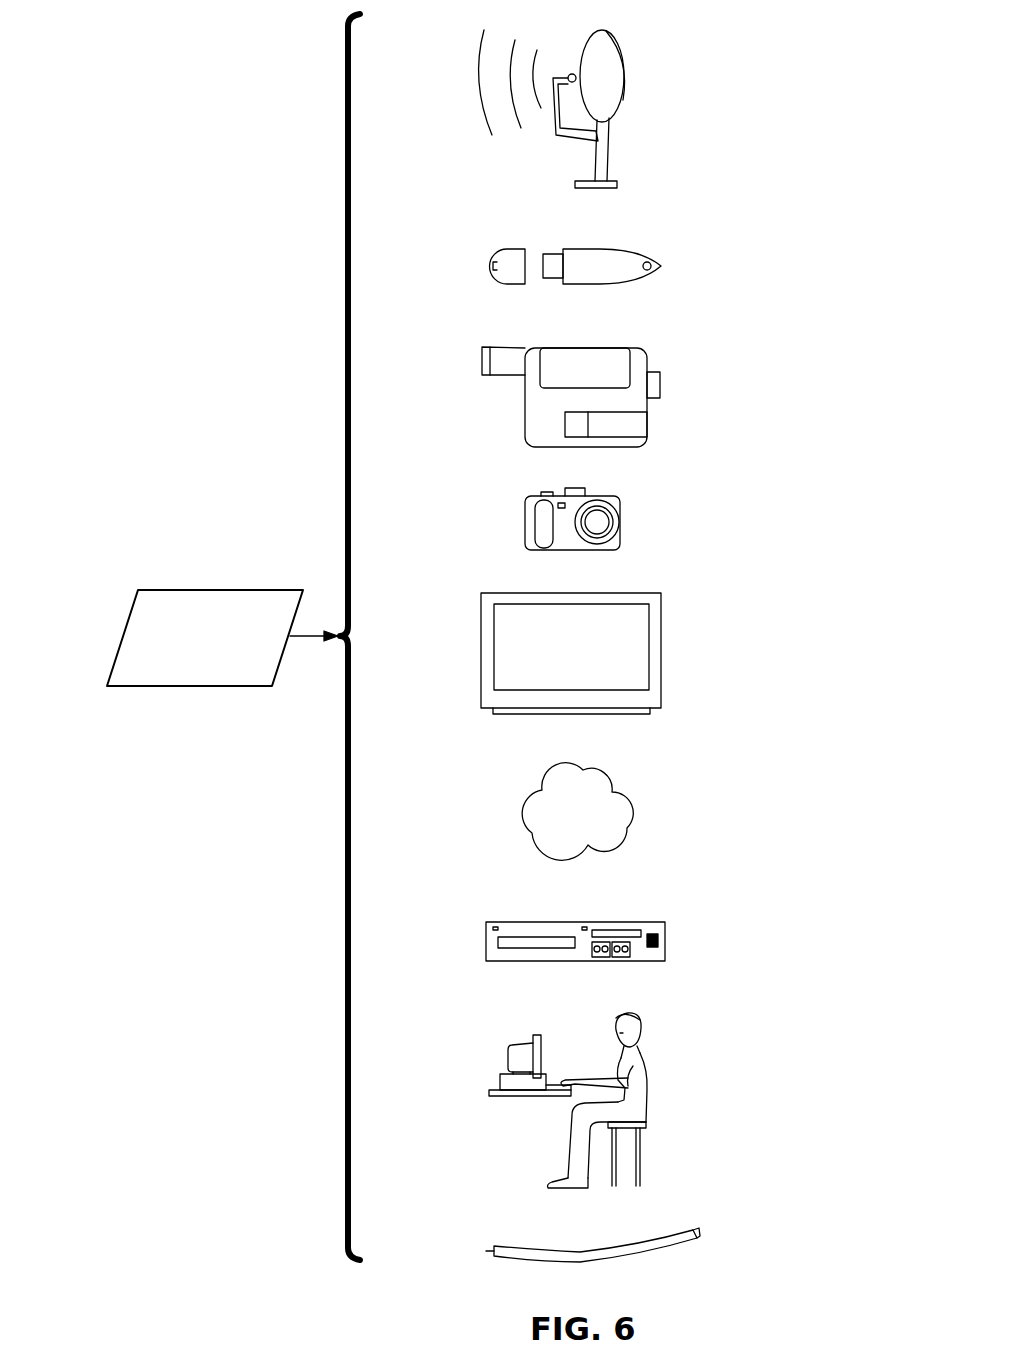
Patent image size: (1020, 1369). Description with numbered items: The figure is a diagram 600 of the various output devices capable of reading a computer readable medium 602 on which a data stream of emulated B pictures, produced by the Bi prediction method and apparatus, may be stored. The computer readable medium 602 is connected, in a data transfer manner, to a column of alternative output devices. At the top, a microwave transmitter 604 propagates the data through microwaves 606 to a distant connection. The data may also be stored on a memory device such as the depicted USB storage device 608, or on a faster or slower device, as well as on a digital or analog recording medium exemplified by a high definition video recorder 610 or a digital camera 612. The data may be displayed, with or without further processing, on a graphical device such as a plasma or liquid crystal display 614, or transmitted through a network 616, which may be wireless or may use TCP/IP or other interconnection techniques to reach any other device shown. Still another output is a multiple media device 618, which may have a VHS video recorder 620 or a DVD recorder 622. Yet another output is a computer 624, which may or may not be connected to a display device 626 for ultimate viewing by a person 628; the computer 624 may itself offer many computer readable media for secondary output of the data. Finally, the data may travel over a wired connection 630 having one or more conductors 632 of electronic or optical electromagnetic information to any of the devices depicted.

The diagram 600 is at (222, 50).
The computer readable medium 602 is at (190, 590).
The microwave transmitter 604 is at (624, 92).
The microwaves 606 is at (487, 128).
The USB storage device 608 is at (640, 252).
The high definition video recorder 610 is at (647, 358).
The digital camera 612 is at (621, 512).
The plasma or liquid crystal display 614 is at (662, 655).
The network 616 is at (645, 795).
The multiple media device 618 is at (666, 940).
The VHS video recorder 620 is at (510, 950).
The DVD recorder 622 is at (630, 922).
The computer 624 is at (500, 1085).
The display device 626 is at (540, 1040).
The person 628 is at (646, 1062).
The wired connection 630 is at (660, 1232).
The conductors 632 is at (700, 1235).